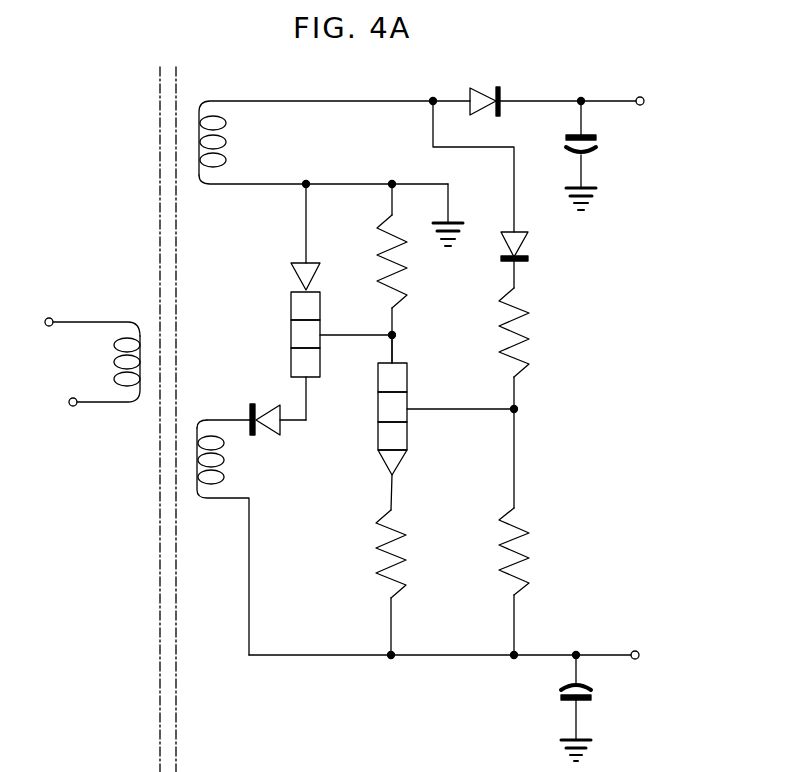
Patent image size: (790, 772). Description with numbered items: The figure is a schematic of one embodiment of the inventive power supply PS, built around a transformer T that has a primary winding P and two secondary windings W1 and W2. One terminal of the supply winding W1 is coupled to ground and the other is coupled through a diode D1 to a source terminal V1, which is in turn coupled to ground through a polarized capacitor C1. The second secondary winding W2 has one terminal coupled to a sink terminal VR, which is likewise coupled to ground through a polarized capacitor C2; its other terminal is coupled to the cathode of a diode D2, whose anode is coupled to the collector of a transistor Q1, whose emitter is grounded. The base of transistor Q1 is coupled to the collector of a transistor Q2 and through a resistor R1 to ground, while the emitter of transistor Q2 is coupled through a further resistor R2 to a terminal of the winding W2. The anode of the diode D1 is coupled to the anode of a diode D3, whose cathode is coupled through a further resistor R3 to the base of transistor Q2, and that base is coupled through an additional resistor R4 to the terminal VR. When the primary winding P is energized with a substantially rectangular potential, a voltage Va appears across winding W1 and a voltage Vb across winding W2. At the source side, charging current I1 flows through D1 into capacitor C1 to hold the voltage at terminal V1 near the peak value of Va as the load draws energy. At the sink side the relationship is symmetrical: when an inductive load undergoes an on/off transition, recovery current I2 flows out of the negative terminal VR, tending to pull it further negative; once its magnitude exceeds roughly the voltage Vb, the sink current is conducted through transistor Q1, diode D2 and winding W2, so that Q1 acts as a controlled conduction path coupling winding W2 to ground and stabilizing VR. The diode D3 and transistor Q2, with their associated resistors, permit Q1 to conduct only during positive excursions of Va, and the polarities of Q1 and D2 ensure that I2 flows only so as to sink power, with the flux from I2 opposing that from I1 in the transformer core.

The transformer T is at (168, 56).
The primary winding P is at (115, 362).
The power supply PS is at (135, 660).
The secondary winding W1 is at (199, 105).
The second secondary winding W2 is at (197, 428).
The diode D1 is at (484, 88).
The diode D2 is at (262, 433).
The diode D3 is at (519, 251).
The transistor Q1 is at (291, 335).
The transistor Q2 is at (378, 418).
The polarized capacitor C1 is at (608, 157).
The polarized capacitor C2 is at (610, 700).
The resistor R1 is at (392, 273).
The further resistor R2 is at (391, 582).
The further resistor R3 is at (514, 348).
The additional resistor R4 is at (514, 532).
The voltage across winding W1 Va is at (244, 142).
The voltage across winding W2 Vb is at (244, 458).
The source terminal V1 is at (597, 98).
The sink terminal VR is at (654, 670).
The charging current I1 is at (520, 88).
The recovery current I2 is at (358, 678).